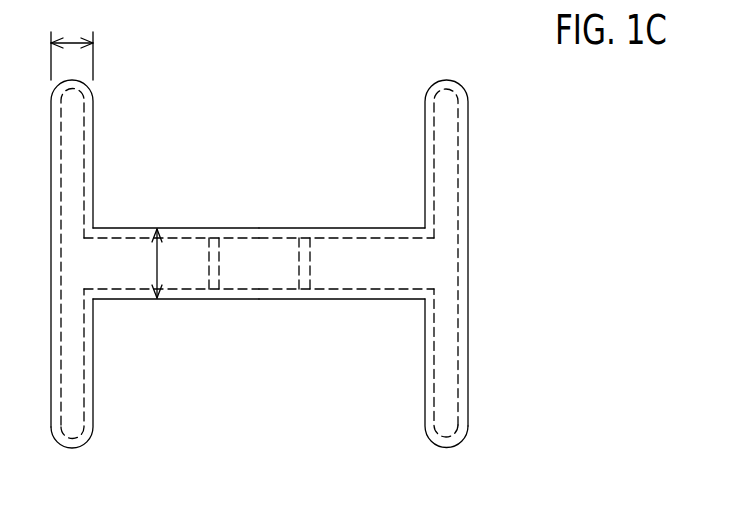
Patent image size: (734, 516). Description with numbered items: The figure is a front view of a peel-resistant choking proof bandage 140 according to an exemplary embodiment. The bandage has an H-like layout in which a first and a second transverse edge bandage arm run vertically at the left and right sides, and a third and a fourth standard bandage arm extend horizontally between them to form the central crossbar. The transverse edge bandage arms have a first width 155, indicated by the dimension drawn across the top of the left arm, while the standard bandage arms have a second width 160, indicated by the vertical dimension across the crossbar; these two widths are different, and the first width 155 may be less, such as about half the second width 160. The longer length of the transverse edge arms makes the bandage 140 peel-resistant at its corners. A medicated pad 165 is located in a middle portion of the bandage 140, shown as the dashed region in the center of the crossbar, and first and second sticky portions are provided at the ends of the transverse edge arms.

The peel-resistant choking proof bandage 140 is at (332, 69).
The first width 155 is at (70, 40).
The second width 160 is at (157, 262).
The medicated pad 165 is at (257, 239).